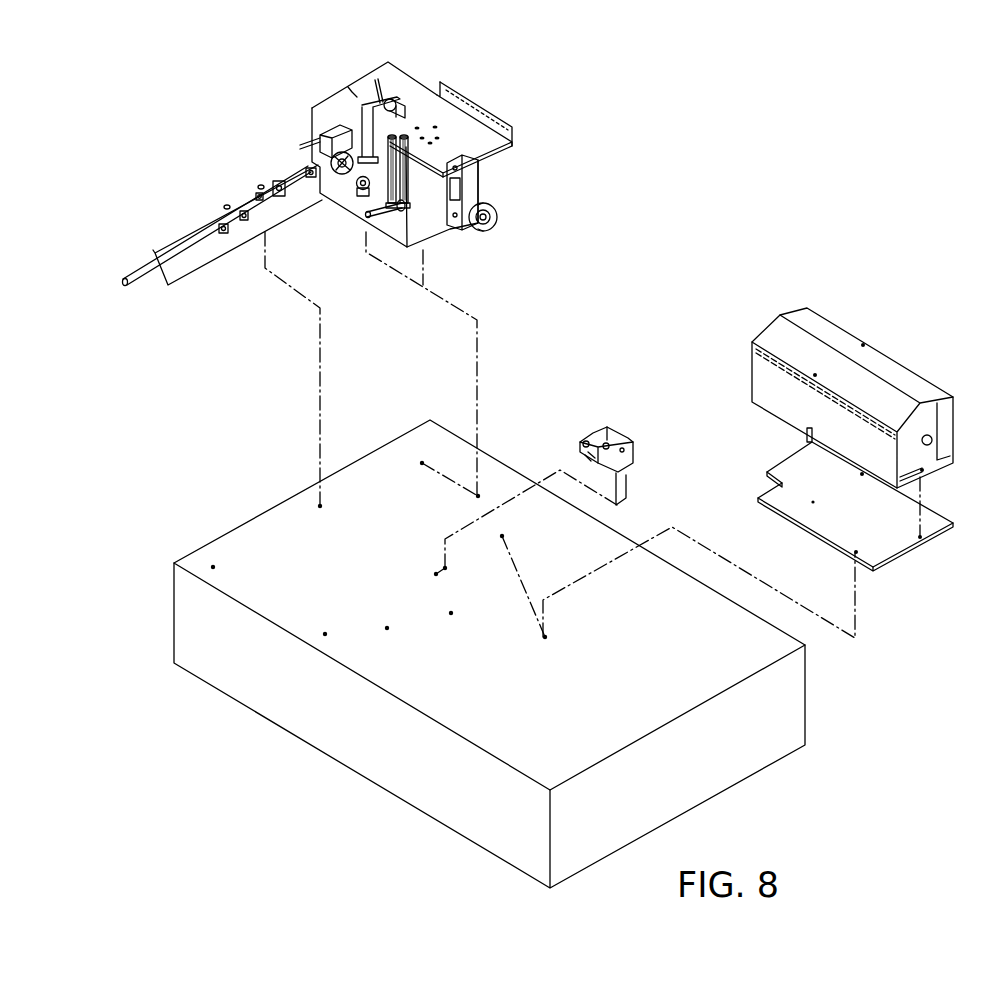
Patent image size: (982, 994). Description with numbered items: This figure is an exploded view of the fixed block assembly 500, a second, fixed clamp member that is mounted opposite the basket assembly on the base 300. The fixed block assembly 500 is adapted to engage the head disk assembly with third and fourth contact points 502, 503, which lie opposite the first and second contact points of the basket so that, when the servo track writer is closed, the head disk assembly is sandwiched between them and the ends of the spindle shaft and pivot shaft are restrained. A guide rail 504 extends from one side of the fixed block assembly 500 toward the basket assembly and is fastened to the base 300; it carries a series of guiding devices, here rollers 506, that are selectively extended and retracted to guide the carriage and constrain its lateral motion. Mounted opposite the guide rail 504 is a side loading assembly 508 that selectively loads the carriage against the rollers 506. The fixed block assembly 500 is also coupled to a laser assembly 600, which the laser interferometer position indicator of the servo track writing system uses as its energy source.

The base 300 is at (735, 738).
The fixed block assembly 500 is at (353, 208).
The third contact point 502 is at (348, 172).
The fourth contact point 503 is at (362, 193).
The guide rail 504 is at (192, 233).
The rollers 506 is at (308, 170).
The side loading assembly 508 is at (635, 455).
The laser assembly 600 is at (830, 310).